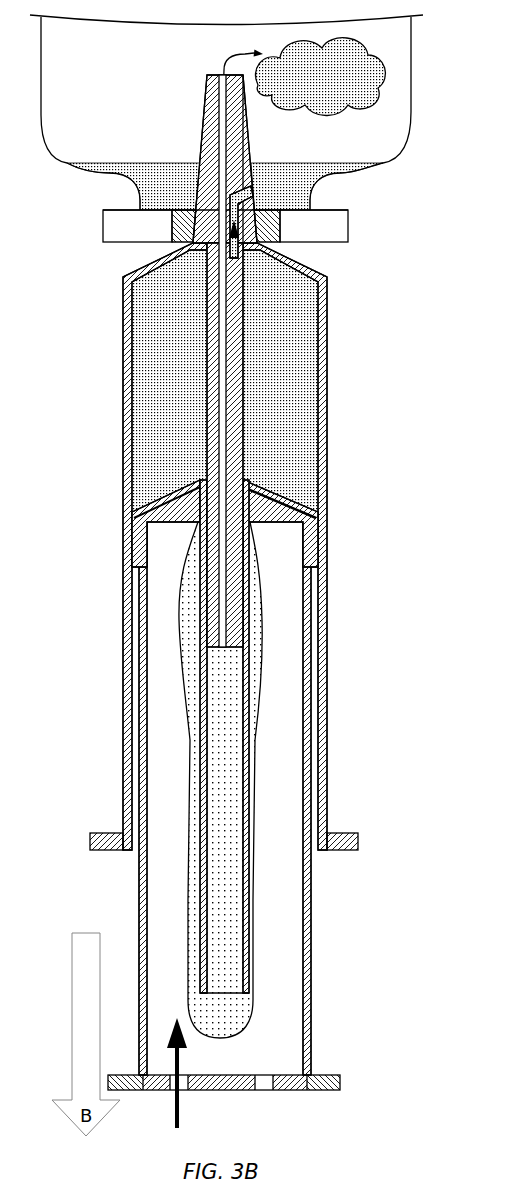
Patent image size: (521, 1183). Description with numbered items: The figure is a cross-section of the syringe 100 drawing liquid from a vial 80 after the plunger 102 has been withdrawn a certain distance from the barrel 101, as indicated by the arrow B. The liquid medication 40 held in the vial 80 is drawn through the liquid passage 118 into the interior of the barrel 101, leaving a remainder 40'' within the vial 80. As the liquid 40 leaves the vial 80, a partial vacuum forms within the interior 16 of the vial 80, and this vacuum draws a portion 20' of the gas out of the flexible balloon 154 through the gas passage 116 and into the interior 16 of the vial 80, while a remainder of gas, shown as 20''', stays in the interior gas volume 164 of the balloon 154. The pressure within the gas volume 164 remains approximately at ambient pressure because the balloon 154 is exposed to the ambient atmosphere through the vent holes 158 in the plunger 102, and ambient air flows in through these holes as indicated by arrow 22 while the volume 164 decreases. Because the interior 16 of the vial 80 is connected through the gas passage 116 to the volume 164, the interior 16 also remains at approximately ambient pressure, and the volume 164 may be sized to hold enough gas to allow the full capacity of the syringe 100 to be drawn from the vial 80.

The syringe 100 is at (156, 78).
The vial 80 is at (73, 186).
The interior of the vial 16 is at (345, 151).
The portion of the gas 20' is at (304, 77).
The remainder of the liquid 40'' is at (225, 186).
The liquid passage 118 is at (283, 257).
The liquid medication 40 is at (257, 259).
The gas passage 116 is at (223, 427).
The flexible balloon 154 is at (262, 622).
The interior gas volume 164 is at (257, 688).
The barrel 101 is at (362, 838).
The plunger 102 is at (313, 920).
The fluid in sleeve 20''' is at (220, 780).
The arrow indicating ambient air flow 22 is at (180, 1110).
The vent holes 158 is at (264, 1096).